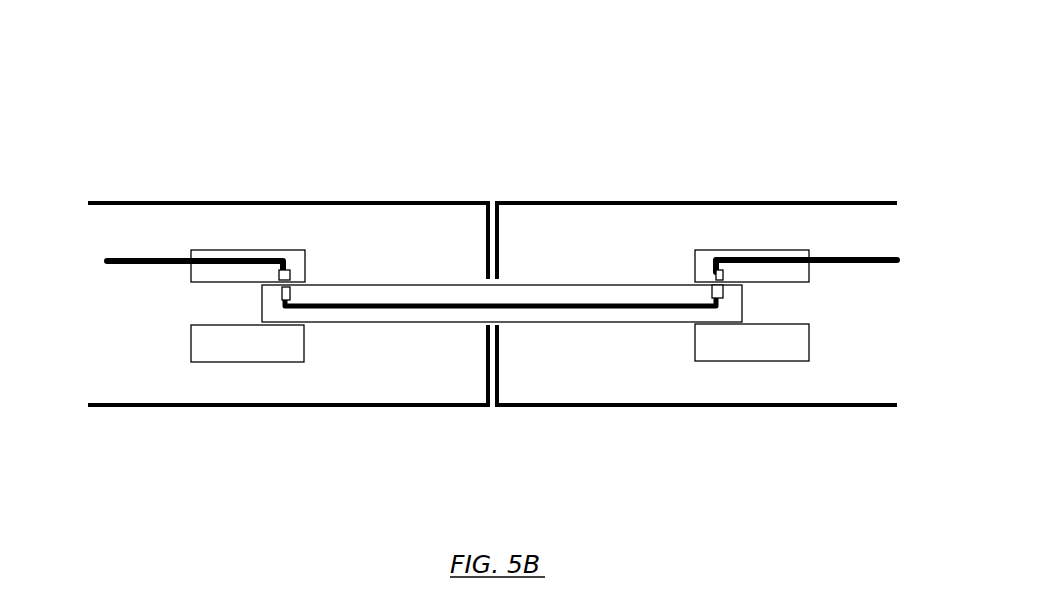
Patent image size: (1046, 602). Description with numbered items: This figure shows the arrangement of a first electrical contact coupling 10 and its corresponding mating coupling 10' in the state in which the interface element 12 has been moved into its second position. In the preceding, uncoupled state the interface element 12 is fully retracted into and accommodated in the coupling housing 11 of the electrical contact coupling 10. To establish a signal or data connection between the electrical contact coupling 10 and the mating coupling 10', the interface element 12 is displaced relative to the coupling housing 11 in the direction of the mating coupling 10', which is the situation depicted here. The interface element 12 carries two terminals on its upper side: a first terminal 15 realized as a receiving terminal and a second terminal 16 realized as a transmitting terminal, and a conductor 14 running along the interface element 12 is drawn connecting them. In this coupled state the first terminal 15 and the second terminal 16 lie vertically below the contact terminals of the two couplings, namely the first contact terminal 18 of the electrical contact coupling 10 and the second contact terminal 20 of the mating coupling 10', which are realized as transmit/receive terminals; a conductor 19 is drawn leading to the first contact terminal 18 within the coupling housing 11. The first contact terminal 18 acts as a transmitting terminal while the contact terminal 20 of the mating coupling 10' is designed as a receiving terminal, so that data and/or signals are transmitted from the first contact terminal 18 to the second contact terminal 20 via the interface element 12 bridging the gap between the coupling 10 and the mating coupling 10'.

The electrical contact coupling 10 is at (288, 304).
The mating coupling 10' is at (697, 304).
The coupling housing 11 is at (152, 202).
The interface element 12 is at (358, 298).
The conductor trace 14 is at (483, 306).
The first terminal 15 is at (283, 287).
The second terminal 16 is at (718, 287).
The first contact terminal 18 is at (281, 271).
The conductor pad 19 is at (222, 250).
The second contact terminal 20 is at (716, 272).